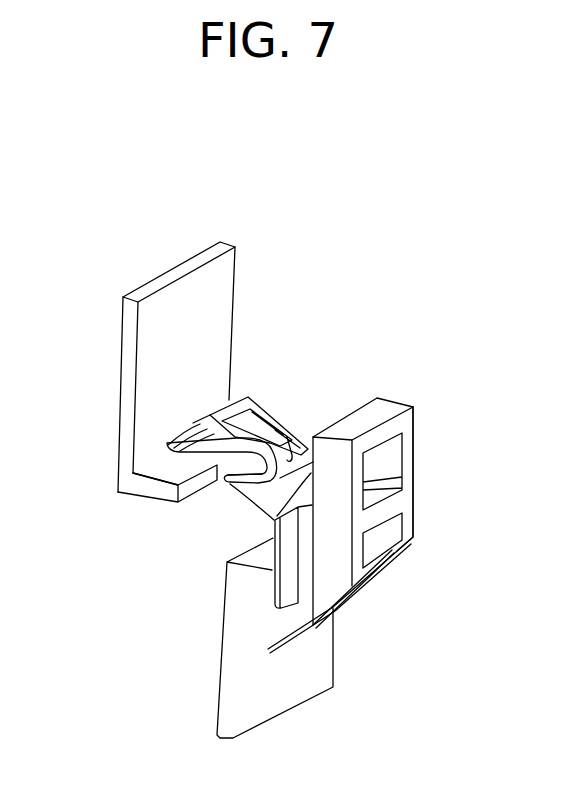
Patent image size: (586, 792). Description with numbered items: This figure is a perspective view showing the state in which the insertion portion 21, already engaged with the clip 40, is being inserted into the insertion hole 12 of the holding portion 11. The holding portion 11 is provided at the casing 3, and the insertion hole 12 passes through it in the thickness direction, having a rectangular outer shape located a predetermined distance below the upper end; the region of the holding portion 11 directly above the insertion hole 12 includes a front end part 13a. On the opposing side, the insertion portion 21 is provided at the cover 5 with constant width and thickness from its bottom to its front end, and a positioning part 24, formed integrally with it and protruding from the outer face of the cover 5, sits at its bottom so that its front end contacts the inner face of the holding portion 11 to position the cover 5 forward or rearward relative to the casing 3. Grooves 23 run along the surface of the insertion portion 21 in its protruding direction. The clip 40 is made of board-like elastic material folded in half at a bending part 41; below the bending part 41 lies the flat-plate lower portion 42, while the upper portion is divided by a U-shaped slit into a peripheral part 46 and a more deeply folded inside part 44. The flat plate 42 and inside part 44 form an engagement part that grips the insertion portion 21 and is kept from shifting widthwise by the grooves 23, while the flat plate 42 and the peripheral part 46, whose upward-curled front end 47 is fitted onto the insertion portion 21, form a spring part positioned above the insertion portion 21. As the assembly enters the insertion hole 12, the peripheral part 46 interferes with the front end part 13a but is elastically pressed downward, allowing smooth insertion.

The casing 3 is at (315, 677).
The cover 5 is at (228, 268).
The holding portion 11 is at (419, 508).
The insertion hole 12 is at (392, 459).
The front end part 13a is at (415, 417).
The insertion portion 21 is at (214, 494).
The grooves 23 is at (205, 420).
The positioning part 24 is at (138, 487).
The clip 40 is at (255, 431).
The bending part 41 is at (250, 483).
The lower portion (lower flat plate) 42 is at (230, 488).
The inside part 44 is at (296, 432).
The peripheral part 46 is at (270, 405).
The front end of peripheral part 47 is at (242, 397).